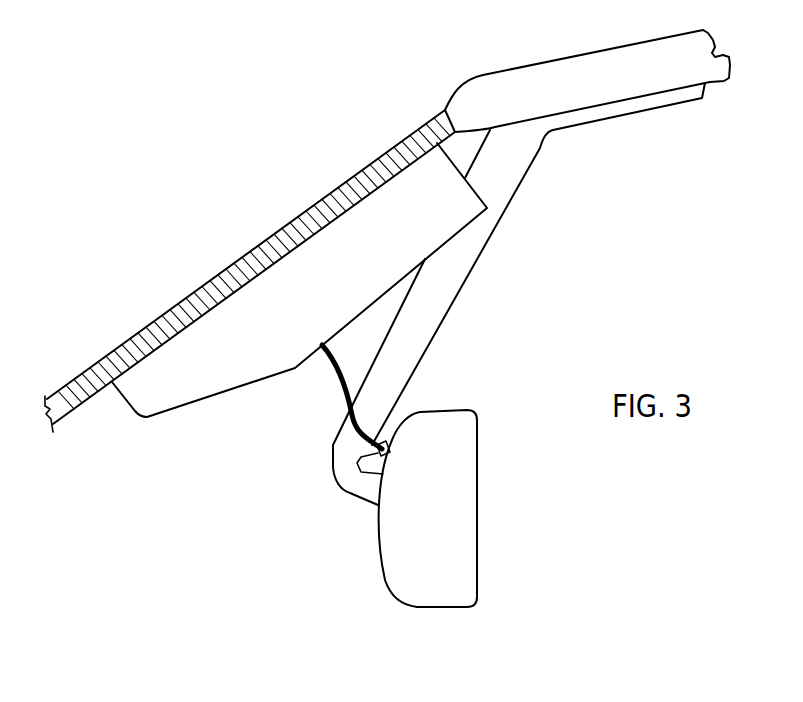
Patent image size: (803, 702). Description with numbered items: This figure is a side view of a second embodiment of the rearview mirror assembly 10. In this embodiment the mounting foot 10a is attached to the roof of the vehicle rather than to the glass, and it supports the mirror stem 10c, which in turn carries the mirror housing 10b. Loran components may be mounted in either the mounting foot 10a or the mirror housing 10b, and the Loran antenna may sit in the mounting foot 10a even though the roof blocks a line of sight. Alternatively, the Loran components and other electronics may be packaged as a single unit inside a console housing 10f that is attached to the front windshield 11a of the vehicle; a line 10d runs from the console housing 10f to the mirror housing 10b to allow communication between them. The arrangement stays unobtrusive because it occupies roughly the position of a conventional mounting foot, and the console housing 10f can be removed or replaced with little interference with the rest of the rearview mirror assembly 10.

The rearview mirror assembly 10 is at (613, 212).
The mounting foot 10a is at (663, 100).
The mirror housing 10b is at (400, 583).
The mirror stem 10c is at (402, 345).
The line 10d is at (333, 371).
The console housing 10f is at (173, 395).
The front windshield 11a is at (155, 342).